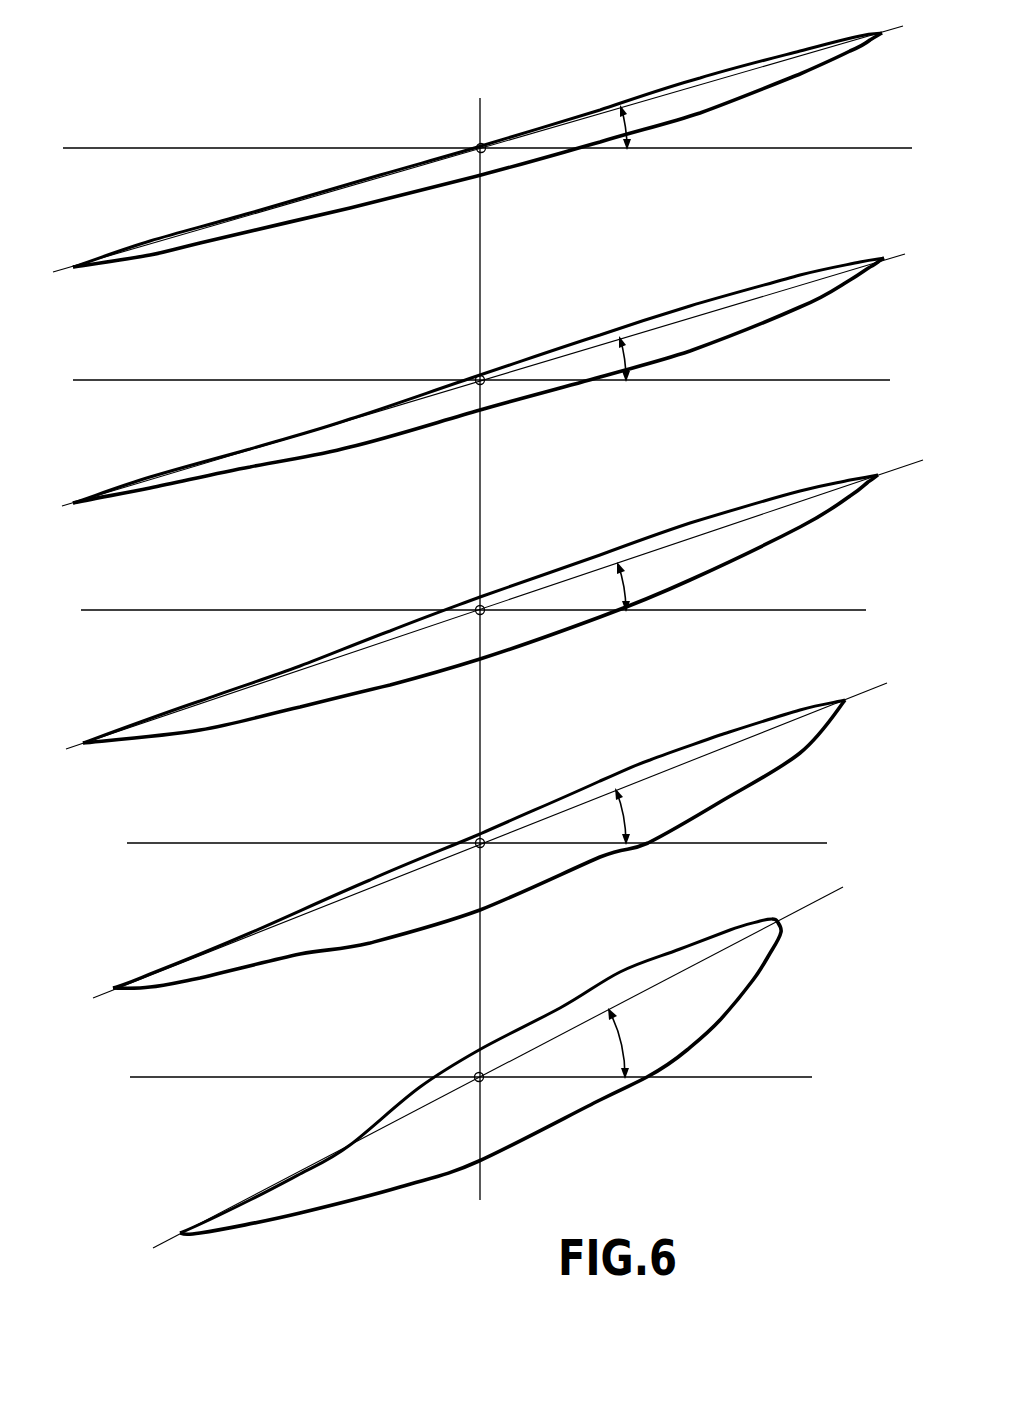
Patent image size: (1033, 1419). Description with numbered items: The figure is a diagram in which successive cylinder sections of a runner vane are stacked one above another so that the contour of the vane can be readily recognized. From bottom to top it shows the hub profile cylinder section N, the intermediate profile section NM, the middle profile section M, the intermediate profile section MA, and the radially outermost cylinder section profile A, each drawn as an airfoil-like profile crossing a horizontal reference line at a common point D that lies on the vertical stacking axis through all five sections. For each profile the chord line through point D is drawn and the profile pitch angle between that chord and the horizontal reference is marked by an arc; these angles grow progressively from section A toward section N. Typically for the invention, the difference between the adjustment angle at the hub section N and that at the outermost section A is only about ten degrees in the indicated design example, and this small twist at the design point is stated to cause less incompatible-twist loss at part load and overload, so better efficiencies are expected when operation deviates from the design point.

The radial outermost cylinder section profile A is at (603, 102).
The profile section MA is at (606, 331).
The profile section M is at (584, 561).
The profile section NM is at (578, 792).
The hub profile cylinder section N is at (574, 996).
The stacking point (chord reference point) D is at (478, 145).